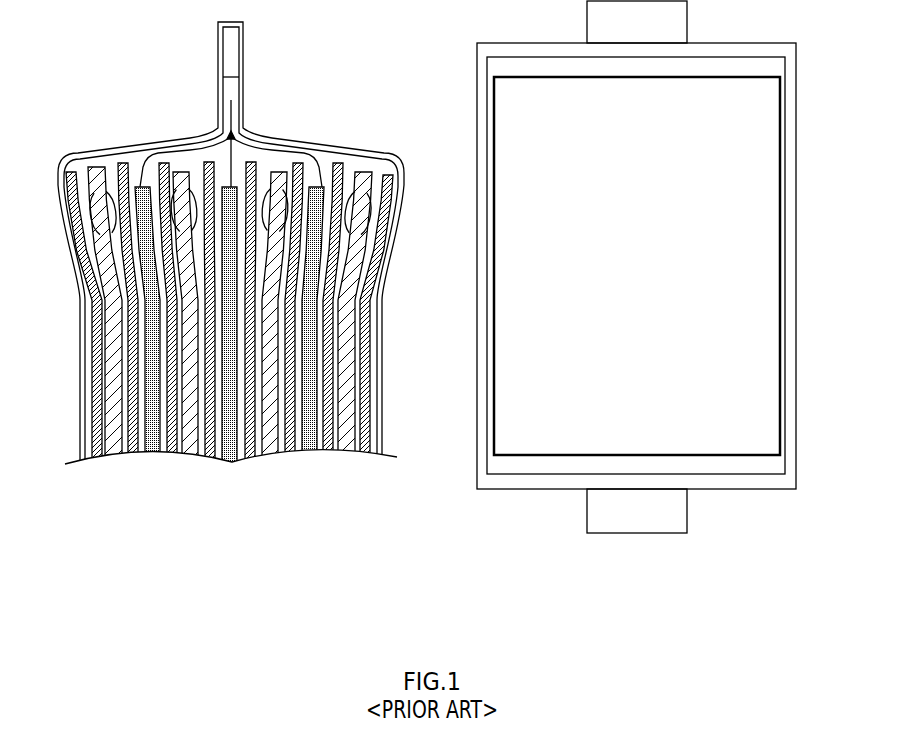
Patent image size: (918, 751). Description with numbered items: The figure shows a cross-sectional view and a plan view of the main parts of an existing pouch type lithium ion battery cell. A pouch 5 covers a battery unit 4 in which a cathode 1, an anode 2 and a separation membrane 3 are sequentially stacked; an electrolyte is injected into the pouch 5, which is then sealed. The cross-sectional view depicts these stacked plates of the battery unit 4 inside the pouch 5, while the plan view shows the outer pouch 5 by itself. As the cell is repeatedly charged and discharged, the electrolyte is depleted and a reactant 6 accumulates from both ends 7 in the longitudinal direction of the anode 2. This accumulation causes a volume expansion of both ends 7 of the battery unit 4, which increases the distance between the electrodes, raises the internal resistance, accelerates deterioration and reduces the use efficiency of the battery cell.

The cathode 1 is at (140, 183).
The anode 2 is at (93, 170).
The separation membrane 3 is at (205, 162).
The battery unit 4 is at (80, 467).
The pouch 5 is at (382, 378).
The reactant 6 is at (93, 222).
The both ends 7 is at (92, 197).